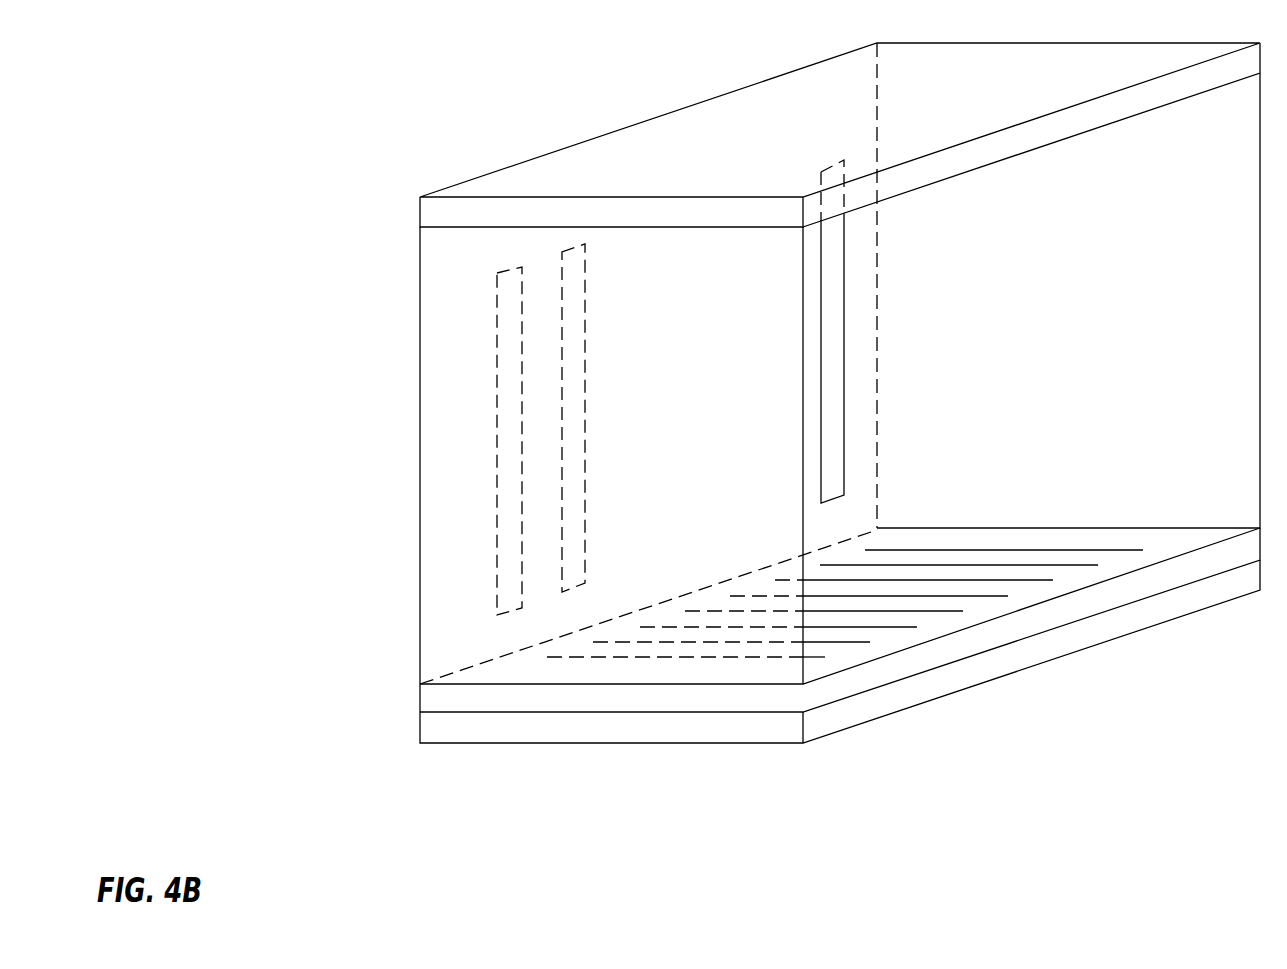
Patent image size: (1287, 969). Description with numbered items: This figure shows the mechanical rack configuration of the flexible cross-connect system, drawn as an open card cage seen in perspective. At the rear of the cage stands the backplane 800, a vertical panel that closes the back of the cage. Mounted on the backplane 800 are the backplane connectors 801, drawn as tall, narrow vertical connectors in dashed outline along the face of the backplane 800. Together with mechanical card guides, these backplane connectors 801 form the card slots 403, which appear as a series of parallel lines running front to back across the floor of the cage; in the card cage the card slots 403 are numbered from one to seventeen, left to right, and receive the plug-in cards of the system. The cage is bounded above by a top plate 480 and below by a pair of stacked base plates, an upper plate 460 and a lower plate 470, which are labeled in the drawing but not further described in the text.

The top cover / upper plate 480 is at (440, 212).
The backplane 800 is at (428, 565).
The backplane connectors 801 is at (842, 163).
The bottom plate 460 is at (447, 691).
The lower plate 470 is at (447, 729).
The card slots 403 is at (960, 612).